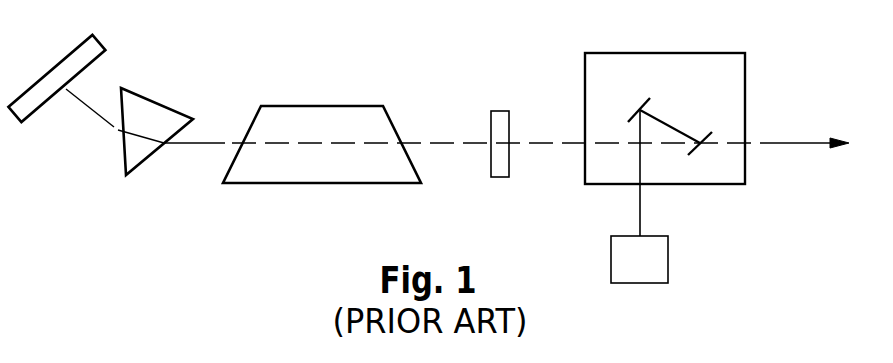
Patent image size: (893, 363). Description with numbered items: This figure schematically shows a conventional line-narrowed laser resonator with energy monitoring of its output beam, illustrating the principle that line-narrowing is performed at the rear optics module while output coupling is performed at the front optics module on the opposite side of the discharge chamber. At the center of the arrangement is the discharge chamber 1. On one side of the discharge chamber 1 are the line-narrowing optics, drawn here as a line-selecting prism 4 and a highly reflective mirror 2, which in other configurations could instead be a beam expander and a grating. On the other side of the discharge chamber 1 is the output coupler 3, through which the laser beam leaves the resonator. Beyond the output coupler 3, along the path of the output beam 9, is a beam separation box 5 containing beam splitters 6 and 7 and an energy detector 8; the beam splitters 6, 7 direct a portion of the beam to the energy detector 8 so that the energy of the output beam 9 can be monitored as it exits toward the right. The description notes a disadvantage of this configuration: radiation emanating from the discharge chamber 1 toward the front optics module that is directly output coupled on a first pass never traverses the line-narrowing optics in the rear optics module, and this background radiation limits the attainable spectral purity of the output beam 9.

The discharge chamber 1 is at (331, 177).
The highly reflective mirror 2 is at (55, 68).
The output coupler 3 is at (497, 110).
The line-selecting prism 4 is at (160, 100).
The beam separation box 5 is at (658, 52).
The beam splitter 6 is at (708, 129).
The beam splitter 7 is at (634, 108).
The energy detector 8 is at (627, 235).
The output beam 9 is at (506, 157).